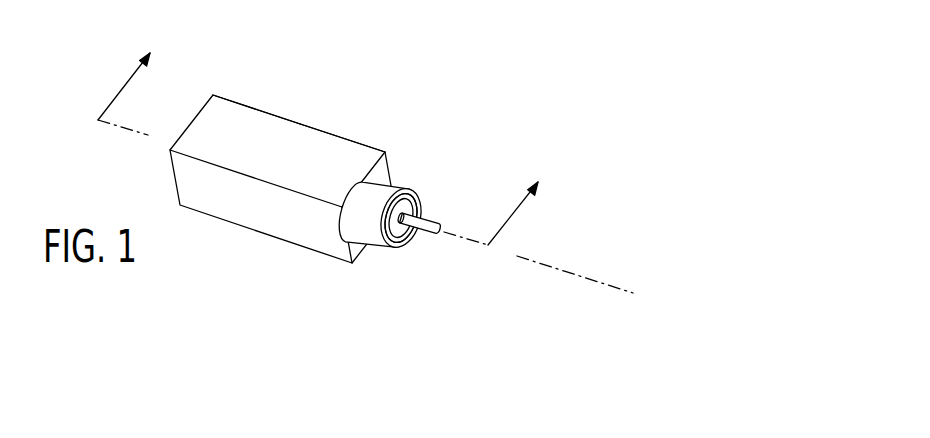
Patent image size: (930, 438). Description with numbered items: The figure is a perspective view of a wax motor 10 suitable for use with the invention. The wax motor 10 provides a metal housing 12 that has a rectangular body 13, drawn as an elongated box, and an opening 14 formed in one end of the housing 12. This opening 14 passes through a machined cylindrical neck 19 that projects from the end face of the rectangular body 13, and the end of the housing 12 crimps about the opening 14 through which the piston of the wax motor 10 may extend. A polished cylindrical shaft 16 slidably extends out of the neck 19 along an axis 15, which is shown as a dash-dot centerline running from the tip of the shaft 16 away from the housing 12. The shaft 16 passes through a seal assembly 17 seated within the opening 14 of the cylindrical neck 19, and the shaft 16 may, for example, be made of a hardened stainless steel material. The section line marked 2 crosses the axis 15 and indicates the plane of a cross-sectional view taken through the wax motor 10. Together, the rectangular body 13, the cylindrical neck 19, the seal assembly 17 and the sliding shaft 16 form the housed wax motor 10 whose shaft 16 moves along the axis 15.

The wax motor 10 is at (363, 73).
The metal housing 12 is at (243, 120).
The rectangular body 13 is at (293, 135).
The opening 14 is at (408, 260).
The axis 15 is at (573, 275).
The cylindrical shaft 16 is at (433, 236).
The seal assembly 17 is at (430, 205).
The cylindrical neck 19 is at (393, 186).
The section line 2- 2 is at (325, 136).